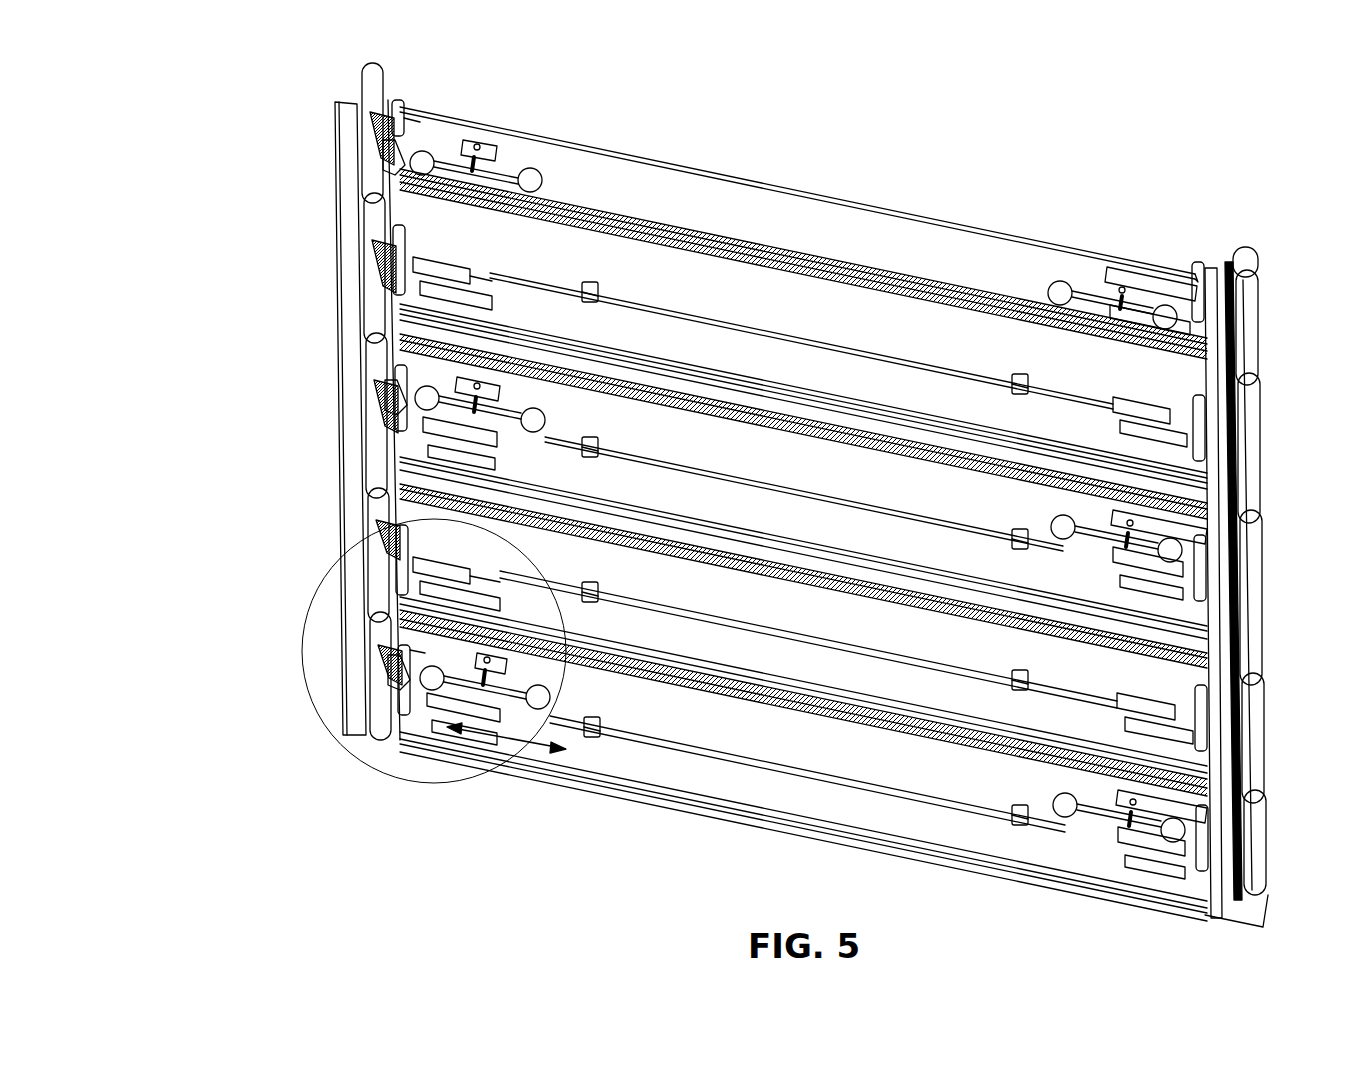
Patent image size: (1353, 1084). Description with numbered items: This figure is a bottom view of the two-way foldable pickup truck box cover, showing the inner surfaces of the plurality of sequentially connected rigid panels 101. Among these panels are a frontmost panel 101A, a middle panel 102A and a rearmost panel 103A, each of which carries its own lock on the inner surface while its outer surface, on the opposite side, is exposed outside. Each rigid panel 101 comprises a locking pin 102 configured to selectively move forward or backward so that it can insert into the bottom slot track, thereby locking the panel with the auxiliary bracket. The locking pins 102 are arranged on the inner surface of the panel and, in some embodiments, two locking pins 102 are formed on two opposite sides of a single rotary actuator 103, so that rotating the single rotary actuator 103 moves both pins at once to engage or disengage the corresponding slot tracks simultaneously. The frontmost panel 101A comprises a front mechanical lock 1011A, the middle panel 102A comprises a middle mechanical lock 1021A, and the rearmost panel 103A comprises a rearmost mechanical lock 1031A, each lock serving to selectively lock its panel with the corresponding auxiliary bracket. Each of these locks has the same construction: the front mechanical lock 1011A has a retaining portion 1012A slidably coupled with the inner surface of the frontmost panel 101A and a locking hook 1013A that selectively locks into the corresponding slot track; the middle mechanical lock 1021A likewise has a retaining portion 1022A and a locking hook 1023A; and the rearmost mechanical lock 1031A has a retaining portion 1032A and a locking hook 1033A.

The rigid panel 101 is at (940, 116).
The frontmost panel 101A is at (690, 718).
The locking pin 102 is at (455, 700).
The middle panel 102A is at (398, 358).
The single rotary actuator 103 is at (592, 722).
The rearmost panel 103A is at (820, 212).
The front mechanical lock 1011A is at (423, 642).
The retaining portion 1012A is at (500, 663).
The locking hook 1013A is at (397, 660).
The middle mechanical lock 1021A is at (423, 370).
The retaining portion 1022A is at (495, 383).
The locking hook 1023A is at (397, 387).
The rearmost mechanical lock 1031A is at (425, 133).
The retaining portion 1032A is at (493, 147).
The locking hook 1033A is at (390, 148).